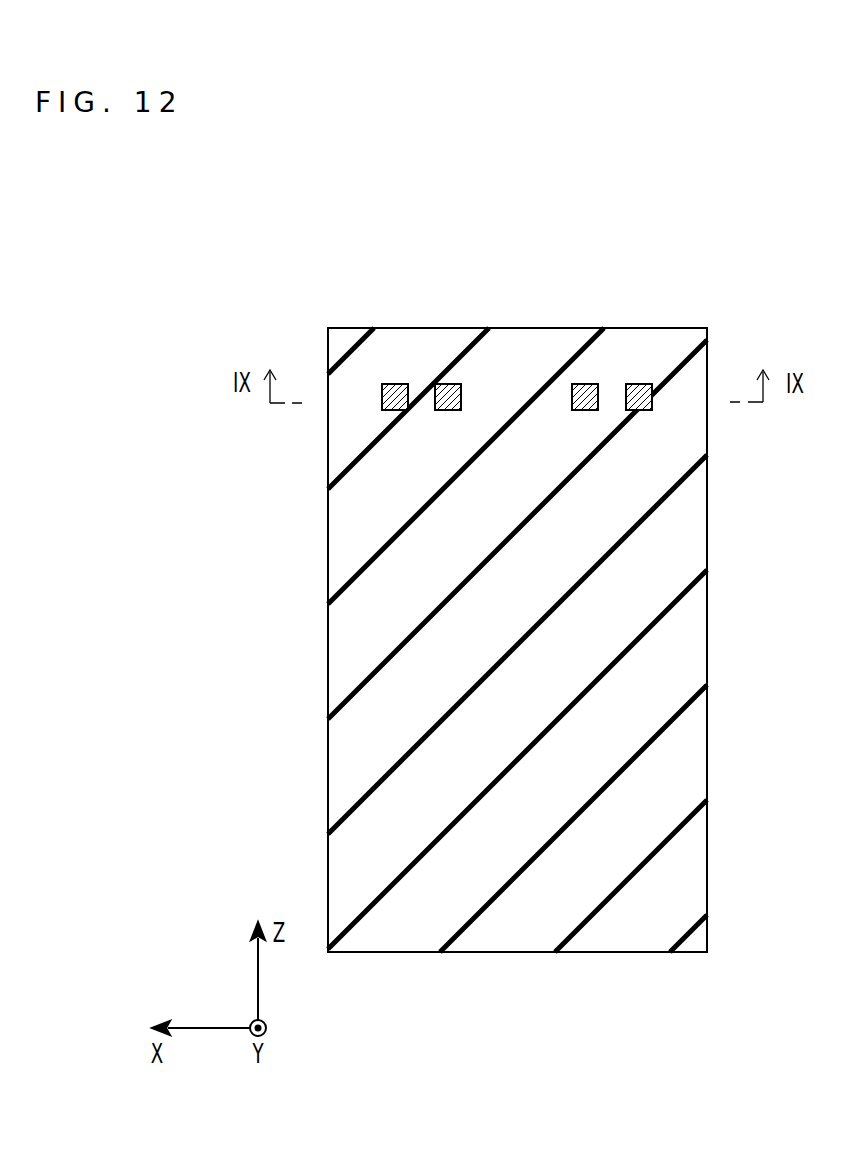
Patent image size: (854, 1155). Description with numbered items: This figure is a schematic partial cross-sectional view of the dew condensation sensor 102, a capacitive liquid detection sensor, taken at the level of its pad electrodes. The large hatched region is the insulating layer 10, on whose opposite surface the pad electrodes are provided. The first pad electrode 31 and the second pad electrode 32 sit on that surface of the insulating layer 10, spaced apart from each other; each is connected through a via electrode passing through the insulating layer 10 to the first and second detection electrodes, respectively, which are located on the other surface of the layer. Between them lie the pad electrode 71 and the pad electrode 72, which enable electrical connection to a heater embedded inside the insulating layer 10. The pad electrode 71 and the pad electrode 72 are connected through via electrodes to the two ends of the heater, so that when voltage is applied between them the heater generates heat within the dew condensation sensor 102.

The dew condensation sensor 102 is at (467, 611).
The insulating layer 10 is at (517, 360).
The first pad electrode 31 is at (392, 394).
The second pad electrode 32 is at (642, 394).
The pad electrode 71 is at (448, 394).
The pad electrode 72 is at (587, 394).